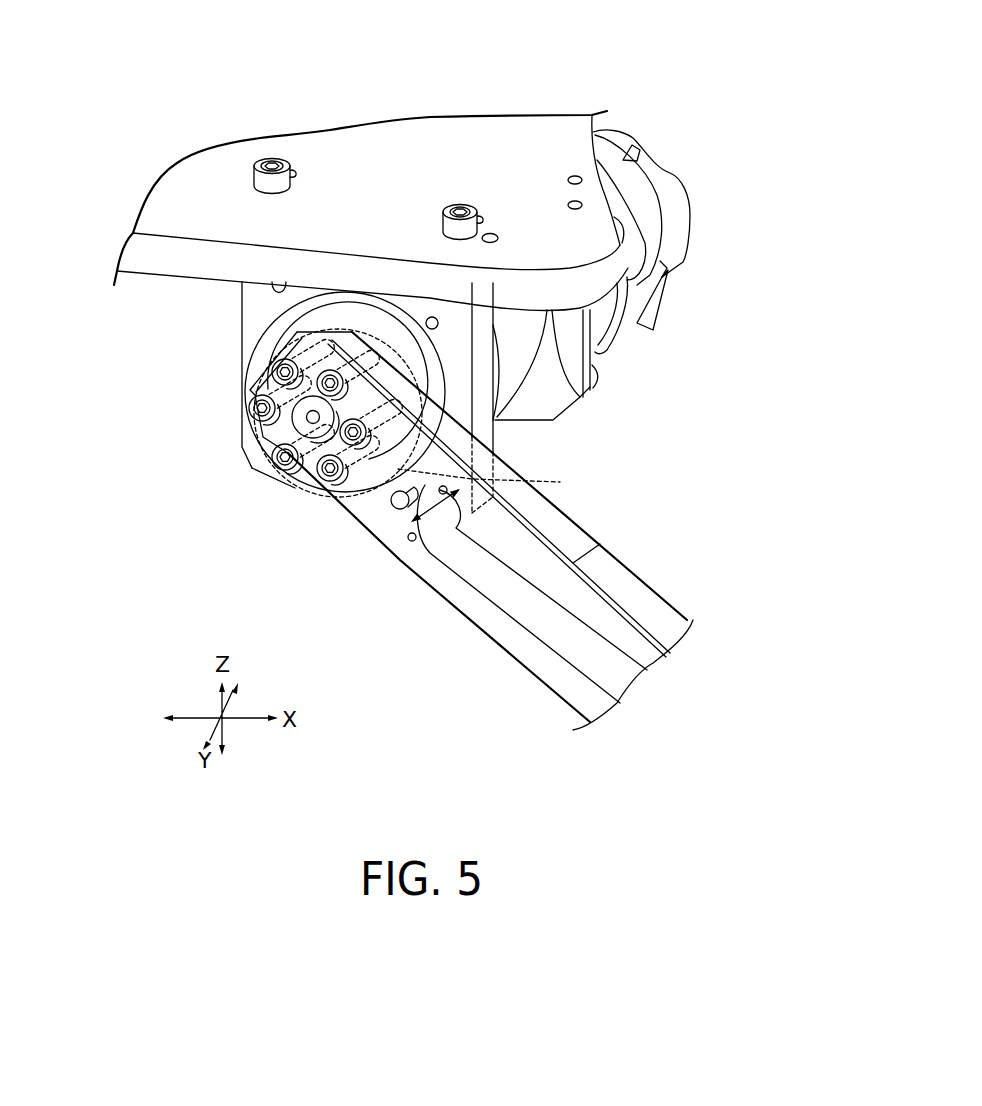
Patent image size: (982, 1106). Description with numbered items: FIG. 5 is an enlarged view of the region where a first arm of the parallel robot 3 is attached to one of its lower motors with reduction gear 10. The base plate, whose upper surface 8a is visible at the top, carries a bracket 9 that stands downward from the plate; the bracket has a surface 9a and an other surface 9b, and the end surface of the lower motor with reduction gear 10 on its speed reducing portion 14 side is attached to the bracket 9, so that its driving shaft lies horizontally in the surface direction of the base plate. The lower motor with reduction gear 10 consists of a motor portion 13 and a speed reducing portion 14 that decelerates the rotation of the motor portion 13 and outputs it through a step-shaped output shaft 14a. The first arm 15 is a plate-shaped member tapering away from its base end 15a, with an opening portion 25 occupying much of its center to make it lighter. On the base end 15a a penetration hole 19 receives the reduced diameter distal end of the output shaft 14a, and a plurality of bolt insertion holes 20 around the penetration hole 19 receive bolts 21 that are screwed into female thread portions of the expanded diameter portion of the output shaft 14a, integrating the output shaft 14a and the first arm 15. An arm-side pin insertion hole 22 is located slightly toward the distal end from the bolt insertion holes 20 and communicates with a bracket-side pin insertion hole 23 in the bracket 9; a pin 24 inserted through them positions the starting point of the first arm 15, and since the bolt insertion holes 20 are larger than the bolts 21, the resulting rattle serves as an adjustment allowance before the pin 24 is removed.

The parallel robot 3 is at (541, 80).
The upper surface 8a is at (415, 128).
The motor portion 13 is at (623, 158).
The lower motor with reduction gear 10 is at (662, 290).
The bracket 9 is at (241, 437).
The other surface 9b is at (243, 311).
The surface 9a is at (496, 443).
The speed reducing portion 14 is at (577, 401).
The output shaft 14a is at (285, 443).
The base end 15a is at (352, 348).
The first arm 15 is at (645, 588).
The penetration hole 19 is at (303, 418).
The bolt insertion holes 20 is at (280, 370).
The bolts 21 is at (358, 440).
The arm-side pin insertion hole 22 is at (425, 485).
The bracket-side pin insertion hole 23 is at (560, 482).
The pin 24 is at (400, 506).
The opening portion 25 is at (547, 622).